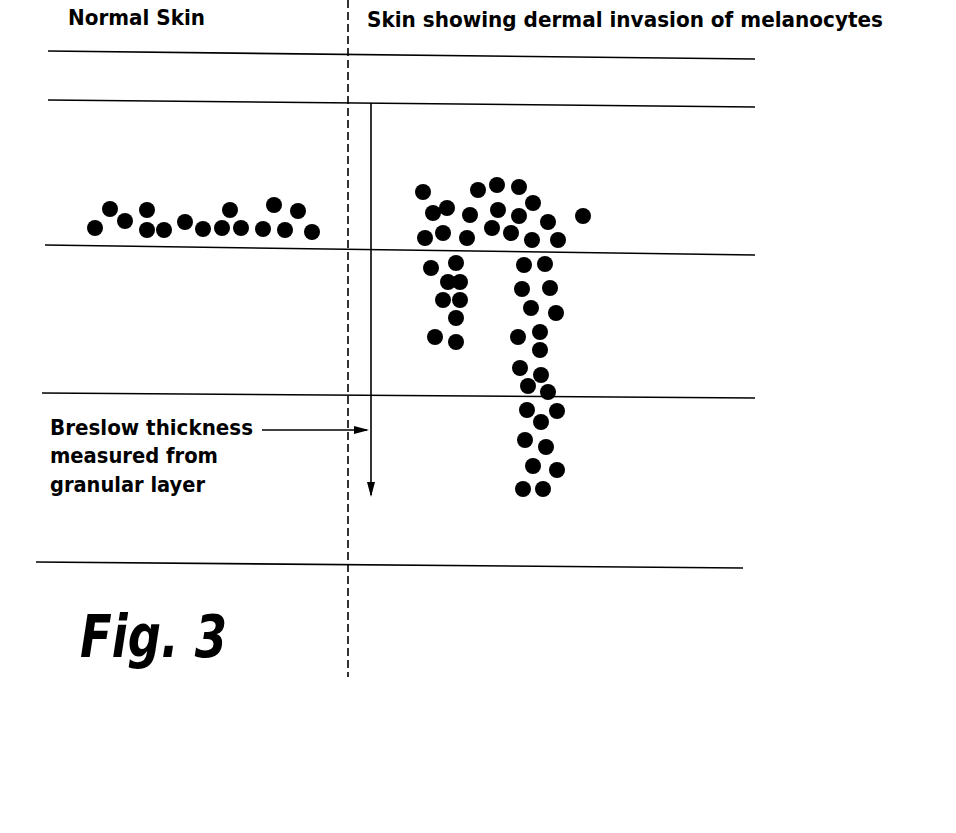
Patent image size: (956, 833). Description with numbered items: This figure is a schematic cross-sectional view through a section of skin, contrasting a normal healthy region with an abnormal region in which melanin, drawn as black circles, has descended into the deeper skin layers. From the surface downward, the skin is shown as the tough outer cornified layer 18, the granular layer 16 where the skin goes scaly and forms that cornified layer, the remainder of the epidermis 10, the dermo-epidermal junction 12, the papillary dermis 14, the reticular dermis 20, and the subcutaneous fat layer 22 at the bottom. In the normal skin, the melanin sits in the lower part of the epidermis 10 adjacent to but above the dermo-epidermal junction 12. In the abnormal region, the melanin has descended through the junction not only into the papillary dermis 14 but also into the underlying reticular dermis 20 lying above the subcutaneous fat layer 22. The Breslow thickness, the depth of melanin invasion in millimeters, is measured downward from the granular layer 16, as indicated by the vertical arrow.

The epidermis 10 is at (696, 193).
The dermo-epidermal junction 12 is at (601, 262).
The papillary dermis 14 is at (676, 357).
The granular layer 16 is at (622, 113).
The cornified layer 18 is at (674, 97).
The reticular dermis 20 is at (674, 504).
The subcutaneous fat layer 22 is at (671, 676).